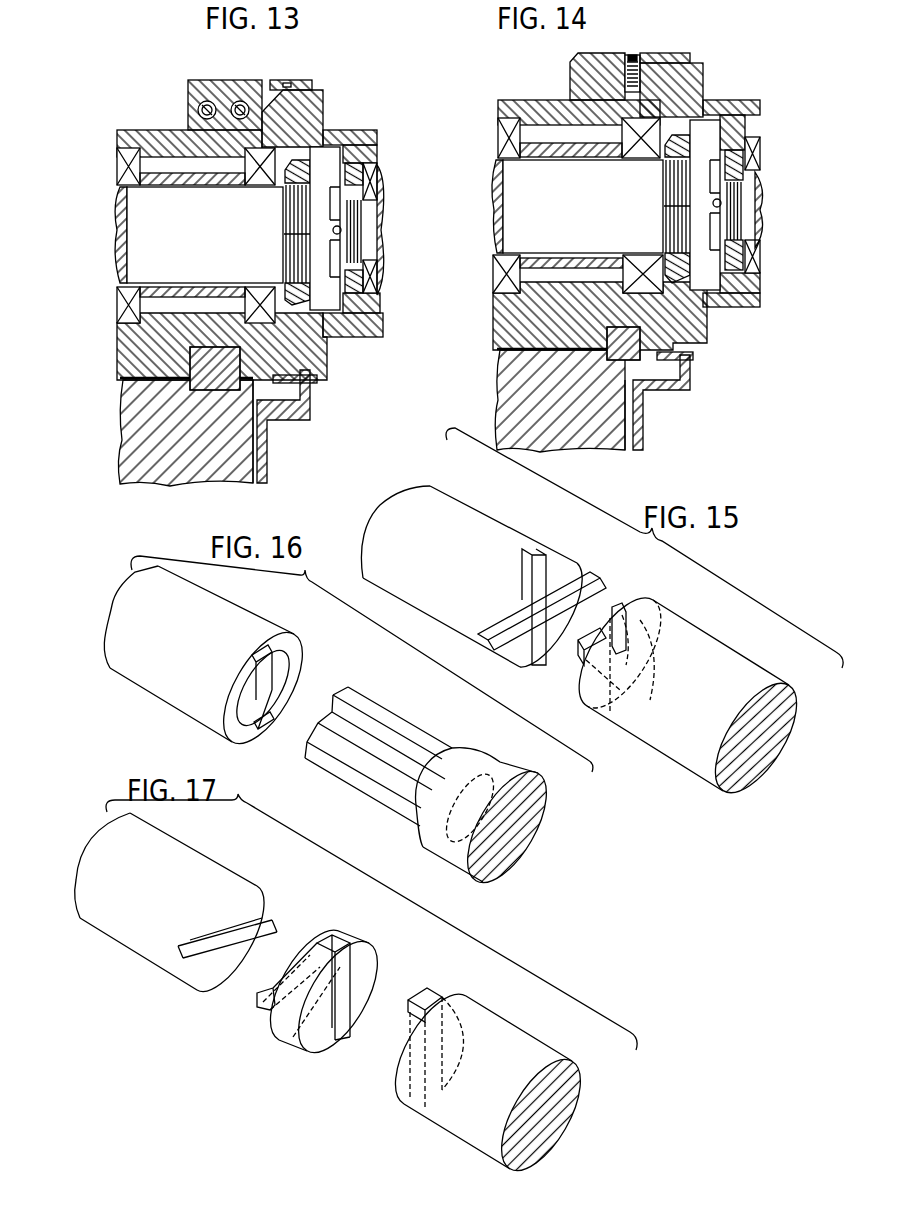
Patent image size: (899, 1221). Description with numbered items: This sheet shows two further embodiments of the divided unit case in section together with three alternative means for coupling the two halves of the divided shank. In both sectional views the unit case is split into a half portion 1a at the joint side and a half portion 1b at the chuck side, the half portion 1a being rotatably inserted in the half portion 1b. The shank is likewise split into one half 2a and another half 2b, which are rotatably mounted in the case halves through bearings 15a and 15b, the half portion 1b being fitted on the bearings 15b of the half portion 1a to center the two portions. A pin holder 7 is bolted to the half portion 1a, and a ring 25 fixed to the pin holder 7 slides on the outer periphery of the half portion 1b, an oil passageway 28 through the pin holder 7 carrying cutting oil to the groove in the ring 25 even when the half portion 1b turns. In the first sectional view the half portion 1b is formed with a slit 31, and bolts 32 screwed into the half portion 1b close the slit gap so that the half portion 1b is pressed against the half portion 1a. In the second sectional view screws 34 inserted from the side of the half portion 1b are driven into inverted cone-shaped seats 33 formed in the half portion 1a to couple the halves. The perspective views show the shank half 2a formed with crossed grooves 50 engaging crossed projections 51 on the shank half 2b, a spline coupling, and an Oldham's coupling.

In FIG. 13, the half portion 1a is at (143, 347).
In FIG. 13, the half portion 1b is at (355, 140).
In FIG. 14, the half portion 1b is at (733, 103).
In FIG. 13, the half of the shank 2a is at (147, 238).
In FIG. 14, the half of the shank 2a is at (503, 227).
In FIG. 15, the half of the shank 2a is at (518, 541).
In FIG. 16, the half of the shank 2a is at (237, 620).
In FIG. 17, the half of the shank 2a is at (155, 947).
In FIG. 13, the half of the shank 2b is at (376, 222).
In FIG. 14, the half of the shank 2b is at (757, 190).
In FIG. 15, the half of the shank 2b is at (670, 743).
In FIG. 16, the half of the shank 2b is at (507, 773).
In FIG. 17, the half of the shank 2b is at (505, 1037).
In FIG. 13, the pin holder 7 is at (158, 447).
In FIG. 14, the pin holder 7 is at (597, 428).
In FIG. 14, the bearing 15a is at (650, 289).
In FIG. 13, the bearing 15b is at (262, 160).
In FIG. 13, the ring 25 is at (300, 82).
In FIG. 14, the ring 25 is at (668, 53).
In FIG. 13, the oil passageway 28 is at (248, 452).
In FIG. 14, the oil passageway 28 is at (627, 410).
In FIG. 13, the slit 31 is at (236, 97).
In FIG. 13, the bolts 32 is at (240, 108).
In FIG. 14, the seats 33 is at (620, 78).
In FIG. 14, the screws 34 is at (633, 55).
In FIG. 13, the groove 50 is at (345, 222).
In FIG. 14, the groove 50 is at (720, 195).
In FIG. 15, the groove 50 is at (563, 626).
In FIG. 13, the projection 51 is at (330, 238).
In FIG. 14, the projection 51 is at (710, 210).
In FIG. 15, the projection 51 is at (673, 626).